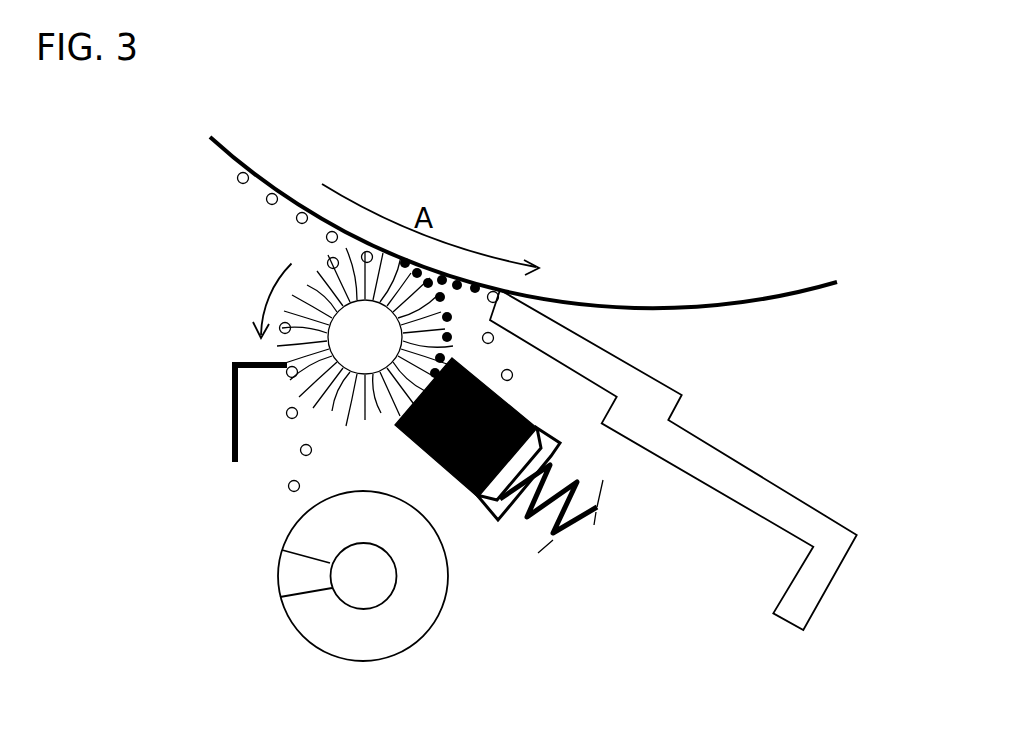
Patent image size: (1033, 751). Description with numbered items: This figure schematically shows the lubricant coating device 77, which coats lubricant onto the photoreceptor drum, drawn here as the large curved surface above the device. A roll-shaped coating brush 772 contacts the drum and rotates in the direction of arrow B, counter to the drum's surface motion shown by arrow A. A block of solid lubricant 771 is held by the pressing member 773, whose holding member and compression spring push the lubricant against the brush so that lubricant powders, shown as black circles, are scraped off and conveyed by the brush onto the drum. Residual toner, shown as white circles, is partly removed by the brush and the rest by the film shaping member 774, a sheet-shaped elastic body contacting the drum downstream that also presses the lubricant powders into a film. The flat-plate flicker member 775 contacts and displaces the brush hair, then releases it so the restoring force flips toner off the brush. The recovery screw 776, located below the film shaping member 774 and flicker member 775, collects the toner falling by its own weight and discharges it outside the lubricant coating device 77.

The lubricant coating device 77 is at (203, 280).
The solid lubricant 771 is at (500, 395).
The coating brush 772 is at (363, 417).
The pressing member 773 is at (495, 521).
The film shaping member 774 is at (682, 397).
The flicker member 775 is at (232, 412).
The recovery screw 776 is at (278, 577).